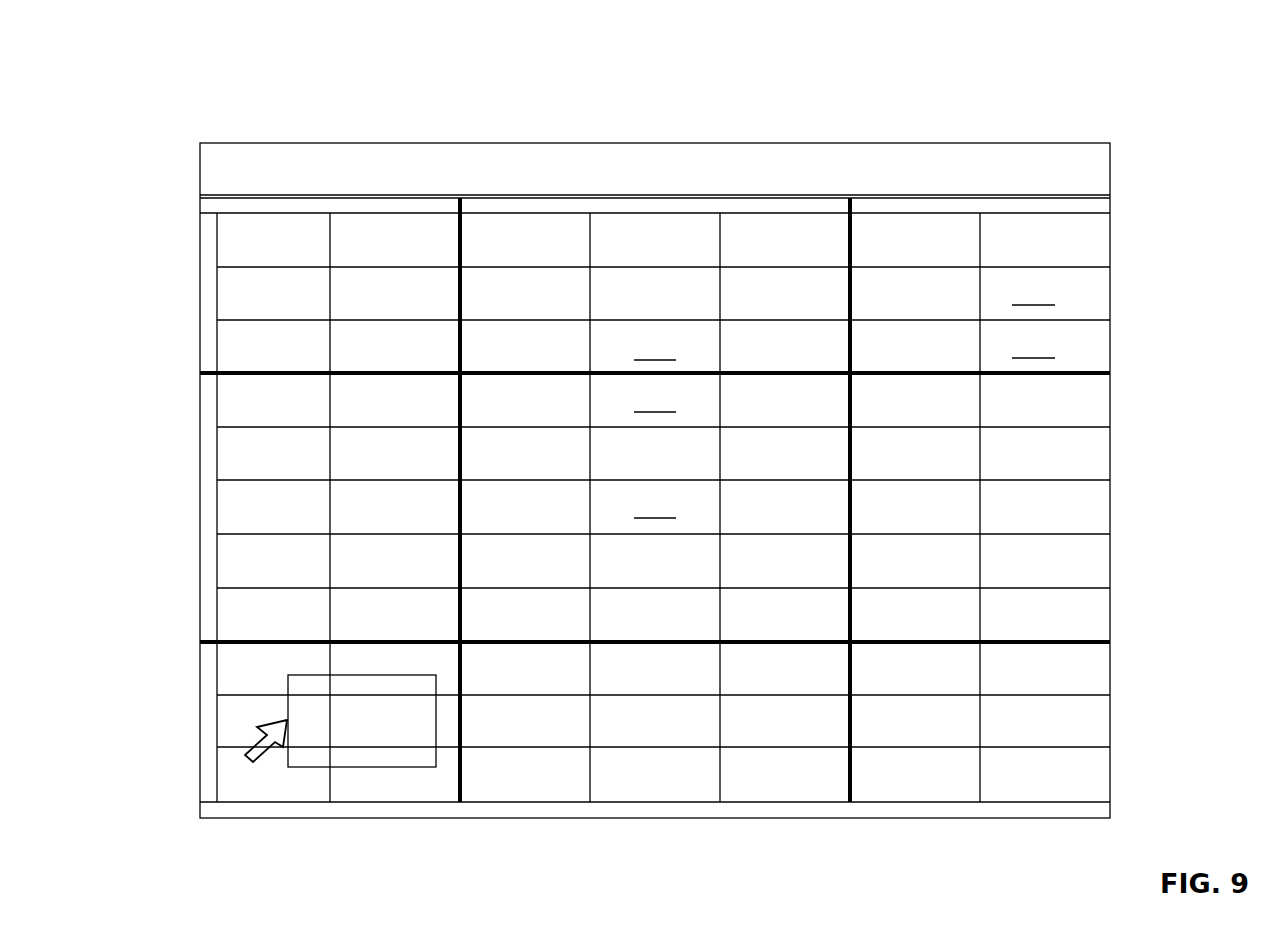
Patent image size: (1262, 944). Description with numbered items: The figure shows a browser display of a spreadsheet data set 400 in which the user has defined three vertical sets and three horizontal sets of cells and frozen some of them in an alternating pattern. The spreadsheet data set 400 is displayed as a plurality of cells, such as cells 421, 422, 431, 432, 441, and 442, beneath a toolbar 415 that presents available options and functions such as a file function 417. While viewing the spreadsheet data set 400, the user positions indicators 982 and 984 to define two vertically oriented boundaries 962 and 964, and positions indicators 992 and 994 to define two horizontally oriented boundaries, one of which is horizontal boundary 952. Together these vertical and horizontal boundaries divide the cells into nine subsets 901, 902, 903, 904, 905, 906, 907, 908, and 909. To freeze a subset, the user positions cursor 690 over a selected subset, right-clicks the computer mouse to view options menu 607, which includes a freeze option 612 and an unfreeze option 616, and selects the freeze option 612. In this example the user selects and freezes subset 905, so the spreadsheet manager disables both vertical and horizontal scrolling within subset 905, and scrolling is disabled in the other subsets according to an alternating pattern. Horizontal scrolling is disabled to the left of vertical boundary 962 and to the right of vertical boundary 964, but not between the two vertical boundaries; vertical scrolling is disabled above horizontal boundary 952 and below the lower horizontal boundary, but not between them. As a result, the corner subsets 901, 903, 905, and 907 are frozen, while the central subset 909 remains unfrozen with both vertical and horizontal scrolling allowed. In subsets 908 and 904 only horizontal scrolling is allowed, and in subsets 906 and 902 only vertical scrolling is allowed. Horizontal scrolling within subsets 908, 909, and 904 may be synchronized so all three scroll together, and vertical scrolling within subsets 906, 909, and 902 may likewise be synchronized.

The spreadsheet data set 400 is at (168, 84).
The toolbar 415 is at (387, 153).
The file function 417 is at (250, 157).
The indicator 982 is at (462, 204).
The indicator 984 is at (852, 204).
The indicator 992 is at (212, 372).
The indicator 994 is at (212, 645).
The subset of spreadsheet cells 907 is at (240, 244).
The subset of spreadsheet cells 908 is at (643, 244).
The subset of spreadsheet cells 901 is at (1087, 248).
The subset of spreadsheet cells 906 is at (241, 570).
The subset of spreadsheet cells 902 is at (1087, 461).
The subset of spreadsheet cells 905 is at (400, 782).
The subset of spreadsheet cells 904 is at (655, 782).
The subset of spreadsheet cells 903 is at (1087, 674).
The vertical boundary 962 is at (462, 305).
The horizontal boundary 952 is at (491, 372).
The vertical boundary 964 is at (852, 305).
The cell 431 is at (1034, 292).
The cell 432 is at (1034, 345).
The cell 441 is at (656, 347).
The cell 442 is at (656, 399).
The central subset of spreadsheet cells 909 is at (656, 505).
The cell 421 is at (237, 402).
The cell 422 is at (237, 457).
The menu 607 is at (375, 675).
The freeze option 612 is at (415, 709).
The unfreeze option 616 is at (430, 740).
The cursor 690 is at (250, 738).